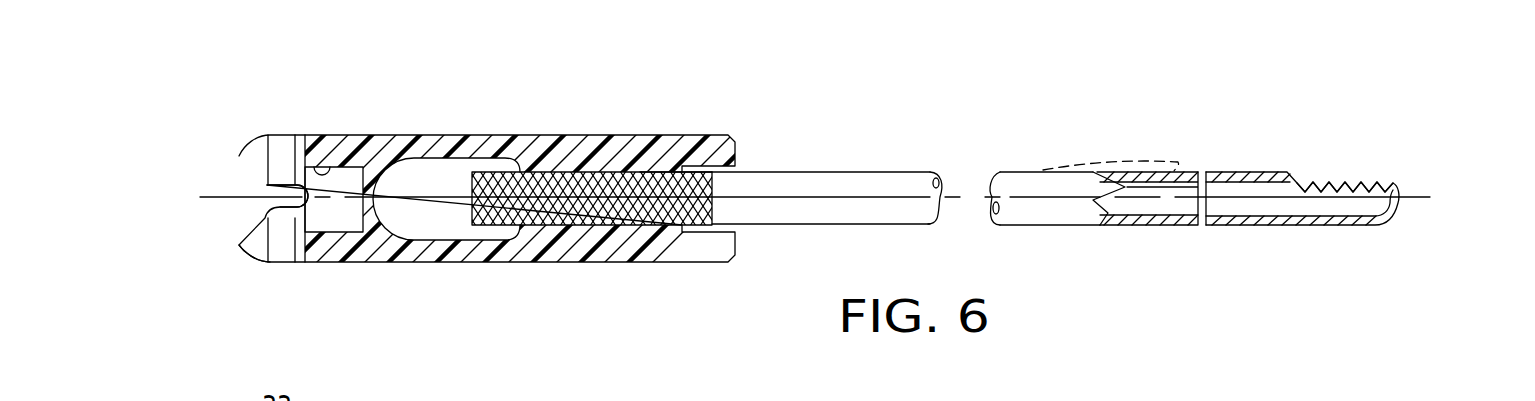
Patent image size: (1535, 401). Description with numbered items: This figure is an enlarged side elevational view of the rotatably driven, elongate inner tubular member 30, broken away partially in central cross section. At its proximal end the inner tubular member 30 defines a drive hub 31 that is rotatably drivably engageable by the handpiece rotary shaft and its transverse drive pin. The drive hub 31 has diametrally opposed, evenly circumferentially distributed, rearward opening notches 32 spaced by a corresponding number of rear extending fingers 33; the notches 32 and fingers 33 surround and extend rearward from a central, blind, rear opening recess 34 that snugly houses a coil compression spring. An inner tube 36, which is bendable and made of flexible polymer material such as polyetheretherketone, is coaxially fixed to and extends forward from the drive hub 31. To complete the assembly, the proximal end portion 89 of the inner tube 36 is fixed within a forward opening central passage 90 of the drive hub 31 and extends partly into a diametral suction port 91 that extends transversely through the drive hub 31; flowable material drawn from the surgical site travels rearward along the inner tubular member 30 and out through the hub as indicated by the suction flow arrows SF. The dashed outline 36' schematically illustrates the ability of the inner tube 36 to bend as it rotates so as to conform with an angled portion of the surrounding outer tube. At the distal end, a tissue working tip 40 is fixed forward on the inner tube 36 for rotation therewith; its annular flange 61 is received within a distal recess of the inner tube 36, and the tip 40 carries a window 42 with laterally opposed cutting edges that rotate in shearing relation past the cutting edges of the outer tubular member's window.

The inner tubular member 30 is at (777, 100).
The drive hub 31 is at (537, 130).
The notches 32 is at (278, 207).
The fingers 33 is at (272, 263).
The recess 34 is at (327, 168).
The inner tube 36 is at (1066, 150).
The bent inner tube 36' is at (1134, 123).
The tissue working tip 40 is at (1281, 235).
The window 42 is at (1337, 182).
The annular flange 61 is at (1245, 172).
The proximal end portion of the inner tube 89 is at (652, 172).
The central passage 90 is at (580, 210).
The suction port 91 is at (421, 232).
The suction flow arrows SF is at (460, 185).